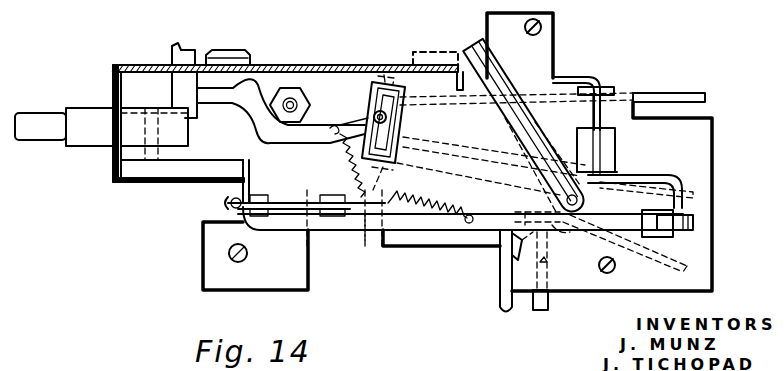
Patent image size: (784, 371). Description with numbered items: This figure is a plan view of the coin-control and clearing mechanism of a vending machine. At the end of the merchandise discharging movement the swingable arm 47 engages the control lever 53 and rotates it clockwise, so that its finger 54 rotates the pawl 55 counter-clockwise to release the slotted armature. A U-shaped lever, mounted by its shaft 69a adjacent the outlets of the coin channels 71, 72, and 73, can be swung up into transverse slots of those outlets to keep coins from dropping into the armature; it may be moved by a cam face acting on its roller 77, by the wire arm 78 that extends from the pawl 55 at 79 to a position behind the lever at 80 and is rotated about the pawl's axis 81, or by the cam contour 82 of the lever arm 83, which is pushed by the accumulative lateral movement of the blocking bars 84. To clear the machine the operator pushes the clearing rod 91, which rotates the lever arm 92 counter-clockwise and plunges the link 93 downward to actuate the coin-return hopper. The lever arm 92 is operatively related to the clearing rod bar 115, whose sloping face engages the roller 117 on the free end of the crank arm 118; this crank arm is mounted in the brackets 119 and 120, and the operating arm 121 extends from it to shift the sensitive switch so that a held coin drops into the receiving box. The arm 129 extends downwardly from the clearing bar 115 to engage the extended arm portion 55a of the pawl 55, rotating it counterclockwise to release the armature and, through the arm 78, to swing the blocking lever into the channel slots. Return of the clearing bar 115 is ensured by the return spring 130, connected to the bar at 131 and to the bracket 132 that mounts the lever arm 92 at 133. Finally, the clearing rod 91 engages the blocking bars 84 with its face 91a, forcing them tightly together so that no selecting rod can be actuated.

The swingable arm 47 is at (238, 50).
The control lever 53 is at (498, 80).
The finger 54 is at (566, 240).
The pawl 55 is at (548, 260).
The extended arm portion 55a is at (550, 300).
The shaft 69a is at (386, 74).
The coin channel 71 is at (684, 92).
The coin channel 72 is at (688, 190).
The coin channel 73 is at (672, 257).
The roller 77 is at (389, 117).
The arm 78 is at (449, 186).
The point of extension 79 is at (514, 260).
The position behind lever 80 is at (367, 230).
The axis 81 is at (523, 212).
The cam contour 82 is at (375, 117).
The lever arm 83 is at (303, 136).
The blocking bars 84 is at (170, 52).
The clearing rod 91 is at (80, 116).
The face 91a is at (185, 138).
The lever arm 92 is at (286, 202).
The link 93 is at (226, 200).
The clearing rod bar 115 is at (333, 224).
The roller 117 is at (697, 221).
The crank arm 118 is at (633, 203).
The bracket 119 is at (612, 147).
The bracket 120 is at (609, 86).
The operating arm 121 is at (578, 77).
The arm 129 is at (498, 299).
The return spring 130 is at (431, 240).
The spring connection point 131 is at (470, 226).
The bracket 132 is at (322, 197).
The spring connection point 133 is at (368, 240).